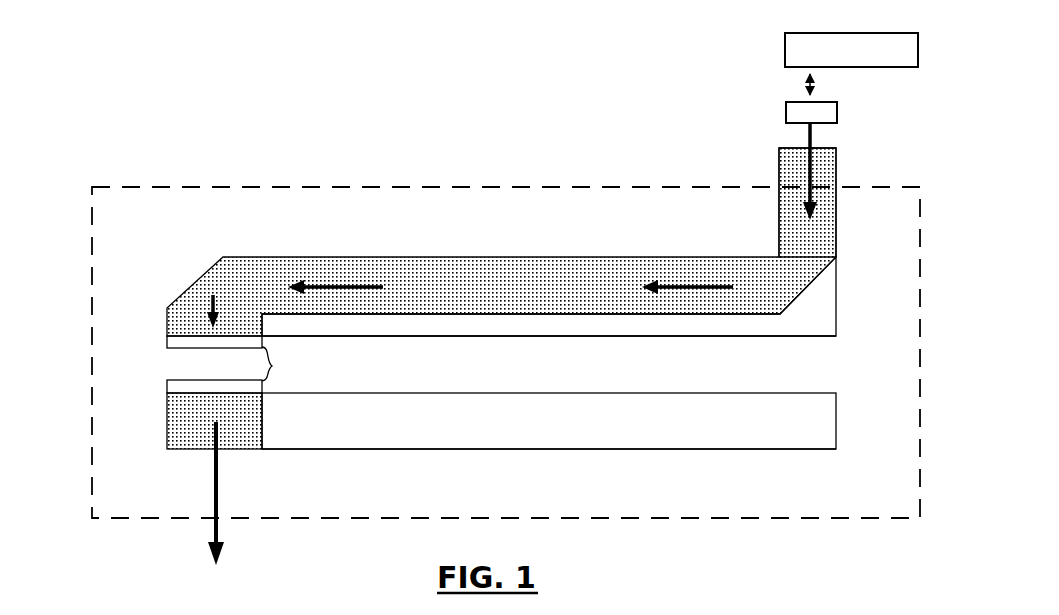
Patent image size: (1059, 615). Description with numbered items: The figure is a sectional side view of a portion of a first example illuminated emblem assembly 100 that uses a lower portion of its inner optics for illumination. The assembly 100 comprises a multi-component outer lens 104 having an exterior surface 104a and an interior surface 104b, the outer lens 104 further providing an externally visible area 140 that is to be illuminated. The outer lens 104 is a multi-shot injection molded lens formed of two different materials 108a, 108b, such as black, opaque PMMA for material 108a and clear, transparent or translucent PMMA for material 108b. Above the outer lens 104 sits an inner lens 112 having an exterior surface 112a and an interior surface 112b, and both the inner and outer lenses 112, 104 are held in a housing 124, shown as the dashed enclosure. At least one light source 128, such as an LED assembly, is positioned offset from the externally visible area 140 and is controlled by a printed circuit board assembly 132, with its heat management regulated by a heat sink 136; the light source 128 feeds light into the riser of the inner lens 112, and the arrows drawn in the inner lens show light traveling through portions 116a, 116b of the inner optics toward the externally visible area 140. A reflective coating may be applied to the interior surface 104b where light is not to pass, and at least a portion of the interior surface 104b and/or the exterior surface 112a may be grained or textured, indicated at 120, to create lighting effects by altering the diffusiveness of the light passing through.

The illuminated emblem assembly 100 is at (170, 91).
The multi-component outer lens 104 is at (460, 432).
The exterior surface of outer lens 104a is at (822, 450).
The interior surface of outer lens 104b is at (823, 392).
The black PMMA material 108a is at (248, 438).
The clear PMMA material 108b is at (618, 427).
The inner lens 112 is at (460, 265).
The exterior surface of inner lens 112a is at (818, 336).
The interior surface of inner lens 112b is at (758, 257).
The heat conducting path first portion 116a is at (240, 270).
The heat conducting path second portion 116b is at (518, 328).
The grained or textured surface 120 is at (272, 366).
The housing 124 is at (479, 187).
The light source 128 is at (786, 112).
The printed circuit board assembly 132 is at (785, 50).
The heat sink 136 is at (851, 50).
The externally visible area 140 is at (214, 507).